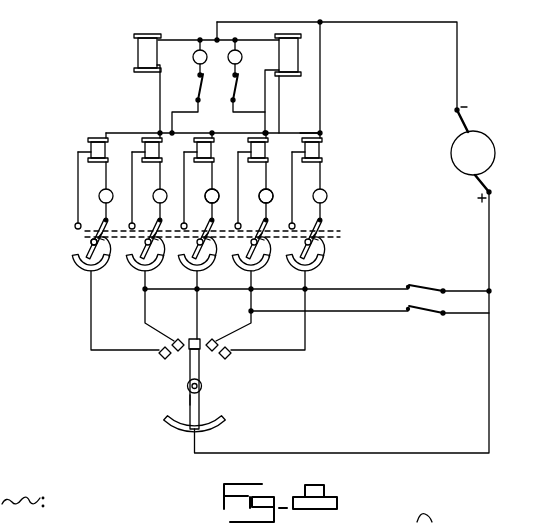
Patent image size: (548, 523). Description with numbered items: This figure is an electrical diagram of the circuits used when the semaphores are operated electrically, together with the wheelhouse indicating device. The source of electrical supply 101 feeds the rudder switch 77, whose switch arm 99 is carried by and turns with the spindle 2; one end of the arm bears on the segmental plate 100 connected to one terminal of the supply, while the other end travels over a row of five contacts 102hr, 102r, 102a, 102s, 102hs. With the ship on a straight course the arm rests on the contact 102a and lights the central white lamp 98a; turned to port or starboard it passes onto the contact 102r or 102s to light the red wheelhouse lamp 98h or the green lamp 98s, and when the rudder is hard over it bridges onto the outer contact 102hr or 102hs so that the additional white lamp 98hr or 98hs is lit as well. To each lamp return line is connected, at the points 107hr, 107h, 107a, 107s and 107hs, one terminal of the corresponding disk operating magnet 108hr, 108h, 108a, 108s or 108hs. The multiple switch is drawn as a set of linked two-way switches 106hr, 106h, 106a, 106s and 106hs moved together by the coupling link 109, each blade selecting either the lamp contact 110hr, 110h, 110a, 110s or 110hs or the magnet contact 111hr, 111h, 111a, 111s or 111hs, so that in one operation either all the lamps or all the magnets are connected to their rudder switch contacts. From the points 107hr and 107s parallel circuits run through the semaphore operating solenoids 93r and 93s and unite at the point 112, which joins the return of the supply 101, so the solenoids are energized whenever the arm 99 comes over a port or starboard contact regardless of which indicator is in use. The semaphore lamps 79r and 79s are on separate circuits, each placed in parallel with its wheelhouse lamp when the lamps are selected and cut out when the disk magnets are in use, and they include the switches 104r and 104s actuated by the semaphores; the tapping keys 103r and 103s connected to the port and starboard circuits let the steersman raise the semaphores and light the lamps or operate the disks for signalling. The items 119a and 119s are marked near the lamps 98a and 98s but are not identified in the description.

The spindle 2 is at (201, 386).
The rudder switch 77 is at (180, 399).
The semaphore signal lamp (port) 79r is at (188, 56).
The semaphore signal lamp (starboard) 79s is at (245, 56).
The semaphore operating solenoid (port) 93r is at (134, 46).
The semaphore operating solenoid (starboard) 93s is at (296, 48).
The hard-a-port white wheelhouse lamp 98hr is at (99, 190).
The port red wheelhouse lamp 98h is at (153, 191).
The central white wheelhouse lamp 98a is at (205, 191).
The starboard green wheelhouse lamp 98s is at (259, 193).
The hard-a-starboard white wheelhouse lamp 98hs is at (313, 193).
The switch arm 99 is at (199, 400).
The segmental plate 100 is at (215, 421).
The source of electrical supply 101 is at (473, 153).
The hard-a-port contact 102hr is at (162, 358).
The port contact 102r is at (172, 345).
The straight-ahead contact 102a is at (199, 343).
The starboard contact 102s is at (218, 345).
The hard-a-starboard contact 102hs is at (230, 356).
The port tapping key 103r is at (415, 285).
The starboard tapping key 103s is at (418, 310).
The semaphore-actuated switch (port) 104r is at (186, 104).
The semaphore-actuated switch (starboard) 104s is at (249, 104).
The two-way switch of multiple switch (hard-a-port) 106hr is at (115, 291).
The two-way switch of multiple switch (port) 106h is at (151, 287).
The two-way switch of multiple switch (straight-ahead) 106a is at (202, 286).
The two-way switch of multiple switch (starboard) 106s is at (249, 287).
The two-way switch of multiple switch (hard-a-starboard) 106hs is at (291, 291).
The connection point (hard-a-port) 107hr is at (107, 133).
The connection point (port) 107h is at (176, 133).
The connection point (straight-ahead) 107a is at (218, 133).
The connection point (starboard) 107s is at (280, 133).
The connection point (hard-a-starboard) 107hs is at (322, 133).
The disk operating magnet (hard-a-port) 108hr is at (88, 146).
The disk operating magnet (port) 108h is at (137, 147).
The disk operating magnet (straight-ahead) 108a is at (193, 147).
The disk operating magnet (starboard) 108s is at (248, 146).
The disk operating magnet (hard-a-starboard) 108hs is at (322, 146).
The coupling link 109 is at (90, 243).
The lamp contact (hard-a-port) 110hr is at (102, 226).
The lamp contact (port) 110h is at (156, 226).
The lamp contact (straight-ahead) 110a is at (209, 226).
The lamp contact (starboard) 110s is at (262, 228).
The lamp contact (hard-a-starboard) 110hs is at (318, 226).
The magnet contact (hard-a-port) 111hr is at (76, 224).
The magnet contact (port) 111h is at (130, 224).
The magnet contact (straight-ahead) 111a is at (182, 221).
The magnet contact (starboard) 111s is at (238, 223).
The magnet contact (hard-a-starboard) 111hs is at (292, 223).
The junction point 112 is at (217, 38).
The lamp 119a is at (212, 197).
The lamp 119s is at (266, 198).